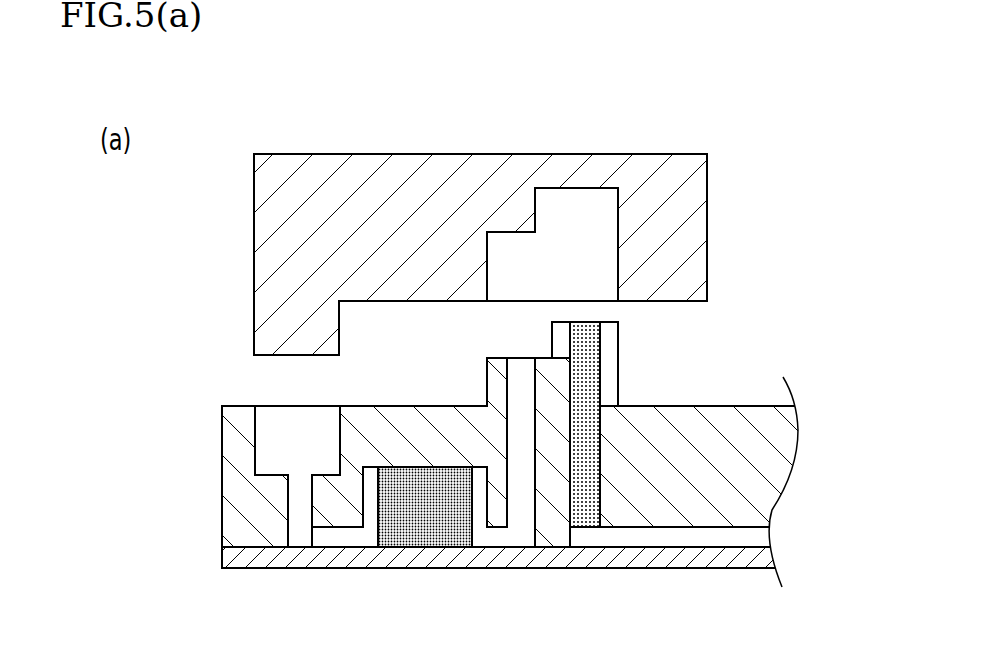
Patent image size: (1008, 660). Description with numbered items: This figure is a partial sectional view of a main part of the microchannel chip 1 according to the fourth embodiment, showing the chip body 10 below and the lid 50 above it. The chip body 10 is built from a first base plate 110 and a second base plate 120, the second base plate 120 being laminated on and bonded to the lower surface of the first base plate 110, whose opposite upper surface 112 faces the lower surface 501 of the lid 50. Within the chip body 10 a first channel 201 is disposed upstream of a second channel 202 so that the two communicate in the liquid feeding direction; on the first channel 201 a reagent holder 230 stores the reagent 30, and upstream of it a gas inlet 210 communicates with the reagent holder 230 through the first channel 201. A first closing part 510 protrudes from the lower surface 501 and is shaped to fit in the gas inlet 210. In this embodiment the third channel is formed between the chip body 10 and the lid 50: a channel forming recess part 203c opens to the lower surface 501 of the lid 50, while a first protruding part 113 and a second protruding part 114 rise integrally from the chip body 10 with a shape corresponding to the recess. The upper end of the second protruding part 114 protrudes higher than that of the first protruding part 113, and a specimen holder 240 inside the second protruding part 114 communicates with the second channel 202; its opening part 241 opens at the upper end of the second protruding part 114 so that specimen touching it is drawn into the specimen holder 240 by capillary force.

The microchannel chip 1 is at (453, 360).
The chip body 10 is at (453, 477).
The first base plate 110 is at (489, 477).
The second base plate 120 is at (472, 567).
The upper surface 112 is at (721, 464).
The first protruding part 113 is at (461, 442).
The second protruding part 114 is at (645, 364).
The reagent 30 is at (425, 561).
The lid 50 is at (460, 228).
The lower surface 501 is at (413, 325).
The first closing part 510 is at (239, 346).
The channel forming recess part 203c is at (633, 244).
The first channel 201 is at (443, 507).
The second channel 202 is at (668, 591).
The gas inlet 210 is at (237, 476).
The reagent holder 230 is at (412, 444).
The specimen holder 240 is at (656, 424).
The opening part 241 is at (635, 317).